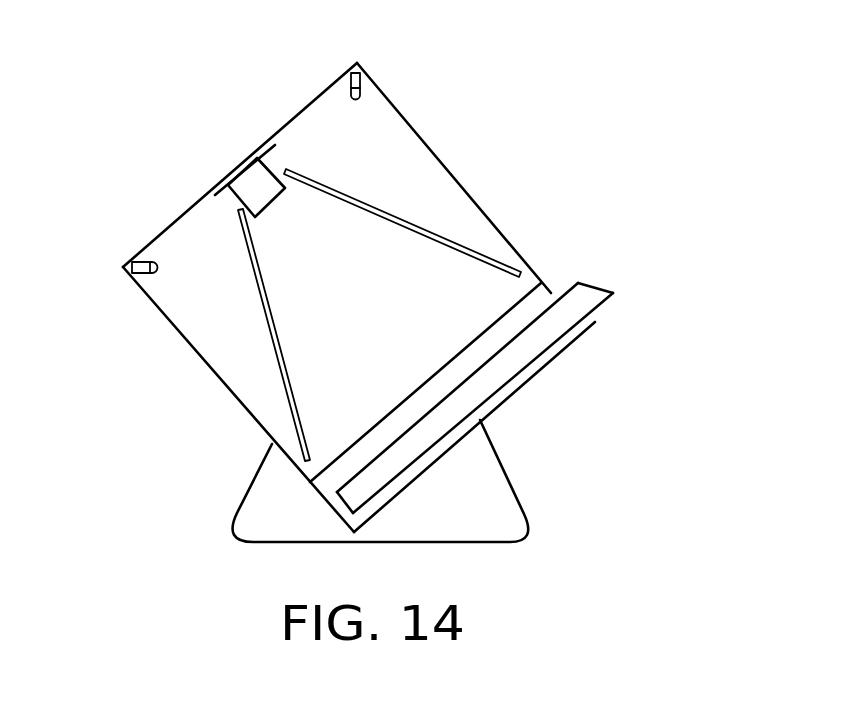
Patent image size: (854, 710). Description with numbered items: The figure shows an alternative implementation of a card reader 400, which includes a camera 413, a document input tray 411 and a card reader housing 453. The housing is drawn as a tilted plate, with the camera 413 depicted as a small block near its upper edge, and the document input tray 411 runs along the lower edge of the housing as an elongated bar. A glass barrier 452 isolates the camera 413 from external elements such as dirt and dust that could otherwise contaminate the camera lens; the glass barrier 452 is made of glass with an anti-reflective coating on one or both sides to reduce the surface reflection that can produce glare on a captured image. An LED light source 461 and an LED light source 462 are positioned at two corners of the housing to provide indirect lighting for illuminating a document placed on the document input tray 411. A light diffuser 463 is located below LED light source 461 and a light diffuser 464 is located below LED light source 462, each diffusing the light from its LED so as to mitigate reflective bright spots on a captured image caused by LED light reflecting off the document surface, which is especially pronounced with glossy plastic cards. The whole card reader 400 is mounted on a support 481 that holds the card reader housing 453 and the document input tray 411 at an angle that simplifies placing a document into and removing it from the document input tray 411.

The card reader 400 is at (650, 96).
The document input tray 411 is at (597, 283).
The camera 413 is at (250, 174).
The glass barrier 452 is at (470, 340).
The card reader housing 453 is at (445, 163).
The LED light source 461 is at (141, 259).
The LED light source 462 is at (367, 86).
The light diffuser 463 is at (295, 385).
The light diffuser 464 is at (376, 212).
The support 481 is at (529, 518).